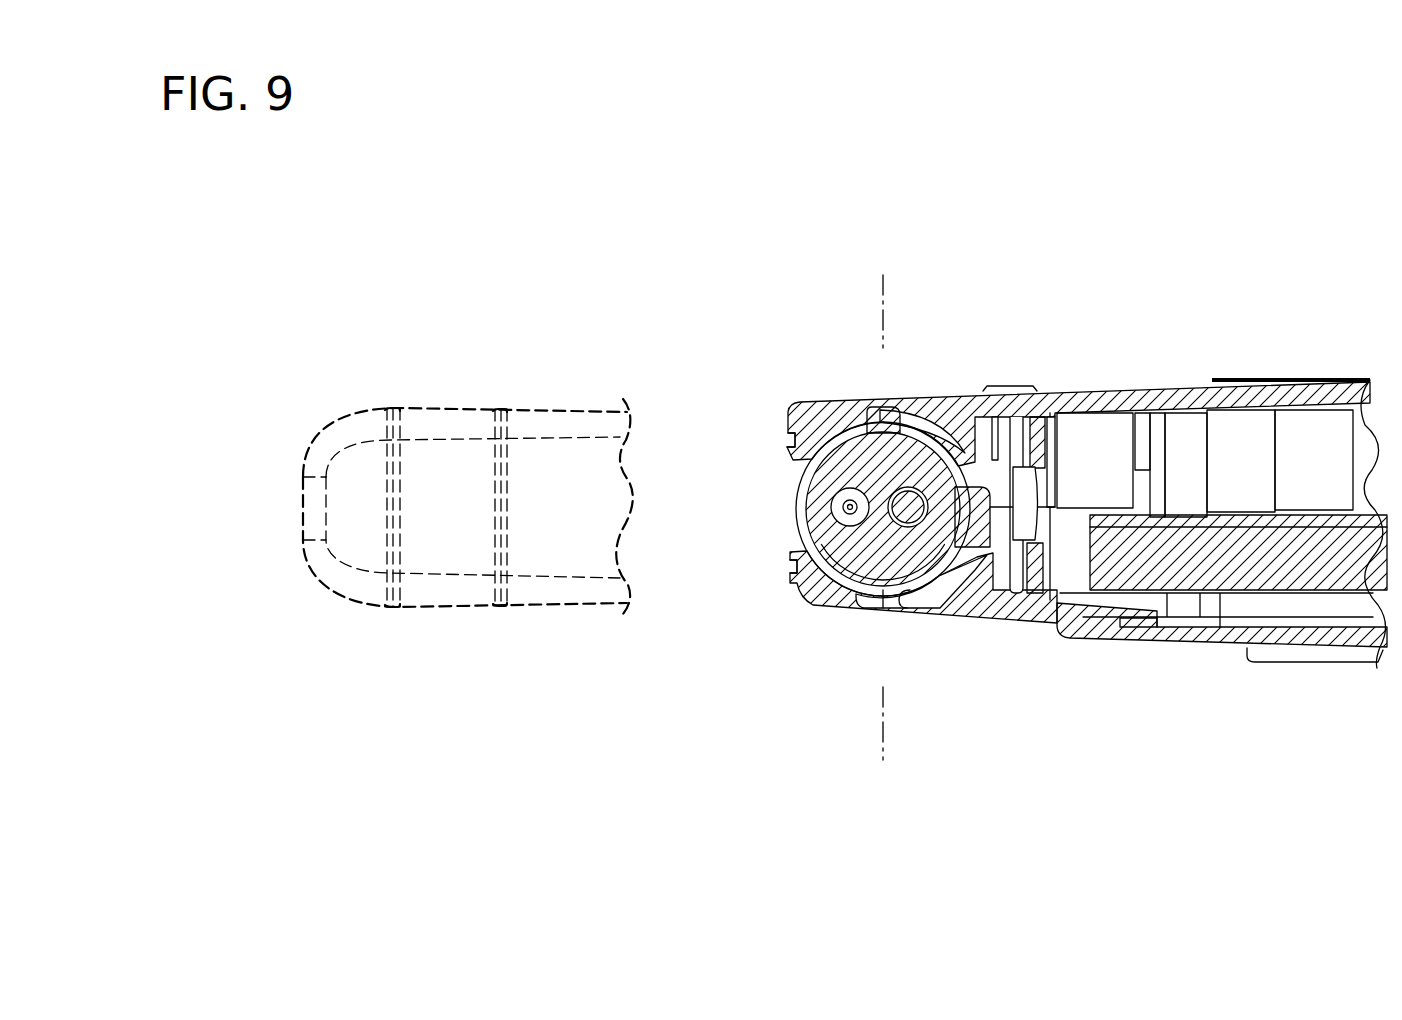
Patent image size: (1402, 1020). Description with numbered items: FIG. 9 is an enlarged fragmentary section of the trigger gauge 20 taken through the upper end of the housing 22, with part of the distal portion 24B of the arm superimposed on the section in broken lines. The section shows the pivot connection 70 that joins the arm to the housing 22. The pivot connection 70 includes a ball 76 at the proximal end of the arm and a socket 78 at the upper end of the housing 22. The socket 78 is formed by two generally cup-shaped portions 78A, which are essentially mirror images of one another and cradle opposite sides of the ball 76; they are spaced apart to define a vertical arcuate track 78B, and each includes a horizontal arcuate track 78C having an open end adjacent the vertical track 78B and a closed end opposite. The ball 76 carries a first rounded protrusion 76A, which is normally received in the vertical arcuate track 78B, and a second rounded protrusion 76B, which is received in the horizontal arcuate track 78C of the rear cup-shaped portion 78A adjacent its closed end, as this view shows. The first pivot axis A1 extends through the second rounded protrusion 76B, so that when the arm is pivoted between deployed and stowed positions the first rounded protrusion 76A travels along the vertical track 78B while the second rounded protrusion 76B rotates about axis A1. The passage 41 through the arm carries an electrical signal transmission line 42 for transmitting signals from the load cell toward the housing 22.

The trigger gauge 20 is at (1158, 217).
The housing 22 is at (1270, 318).
The distal portion 24B is at (458, 402).
The passage 41 is at (832, 512).
The electrical signal transmission line 42 is at (852, 500).
The pivot connection 70 is at (721, 328).
The ball 76 is at (873, 513).
The first rounded protrusion 76A is at (983, 547).
The second rounded protrusion 76B is at (903, 396).
The socket 78 is at (762, 592).
The cup-shaped portion 78A is at (838, 476).
The vertical arcuate track 78B is at (995, 483).
The horizontal arcuate track 78C is at (927, 427).
The first pivot axis A1 is at (883, 285).